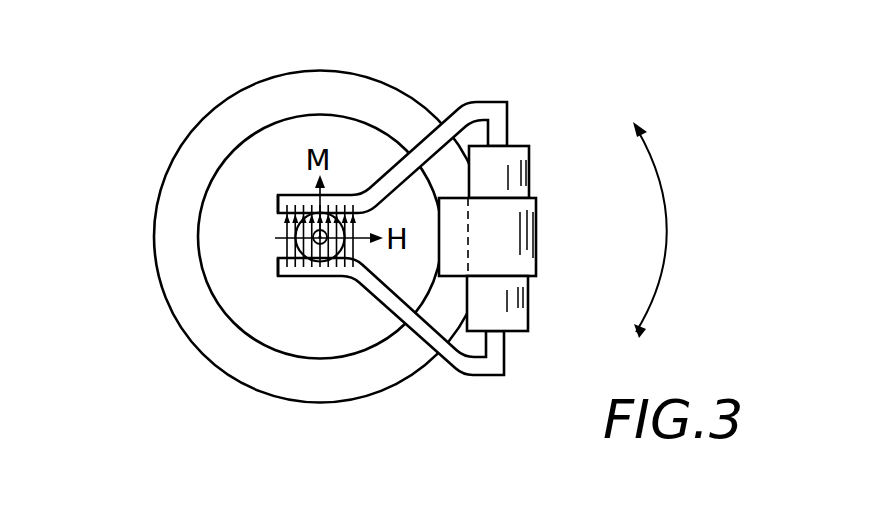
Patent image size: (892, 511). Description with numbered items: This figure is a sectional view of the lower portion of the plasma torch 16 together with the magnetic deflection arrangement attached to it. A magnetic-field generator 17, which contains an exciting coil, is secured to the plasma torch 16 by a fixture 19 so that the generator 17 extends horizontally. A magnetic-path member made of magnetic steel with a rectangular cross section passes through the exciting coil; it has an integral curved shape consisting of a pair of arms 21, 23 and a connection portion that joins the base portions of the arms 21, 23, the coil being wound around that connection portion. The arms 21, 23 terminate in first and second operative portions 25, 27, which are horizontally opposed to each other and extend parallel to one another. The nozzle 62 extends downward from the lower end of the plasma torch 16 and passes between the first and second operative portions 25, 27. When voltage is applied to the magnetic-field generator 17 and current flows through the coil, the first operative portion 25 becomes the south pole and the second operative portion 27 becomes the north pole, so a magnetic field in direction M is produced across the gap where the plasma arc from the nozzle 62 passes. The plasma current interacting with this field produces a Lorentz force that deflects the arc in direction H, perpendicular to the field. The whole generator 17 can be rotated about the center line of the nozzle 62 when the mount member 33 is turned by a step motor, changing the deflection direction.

The plasma torch 16 is at (200, 173).
The mount member 33 is at (306, 70).
The first operative portion 25 is at (293, 197).
The second operative portion 27 is at (315, 275).
The nozzle 62 is at (288, 248).
The arm 21 is at (485, 102).
The arm 23 is at (475, 377).
The magnetic-field generator 17 is at (530, 173).
The fixture 19 is at (537, 240).